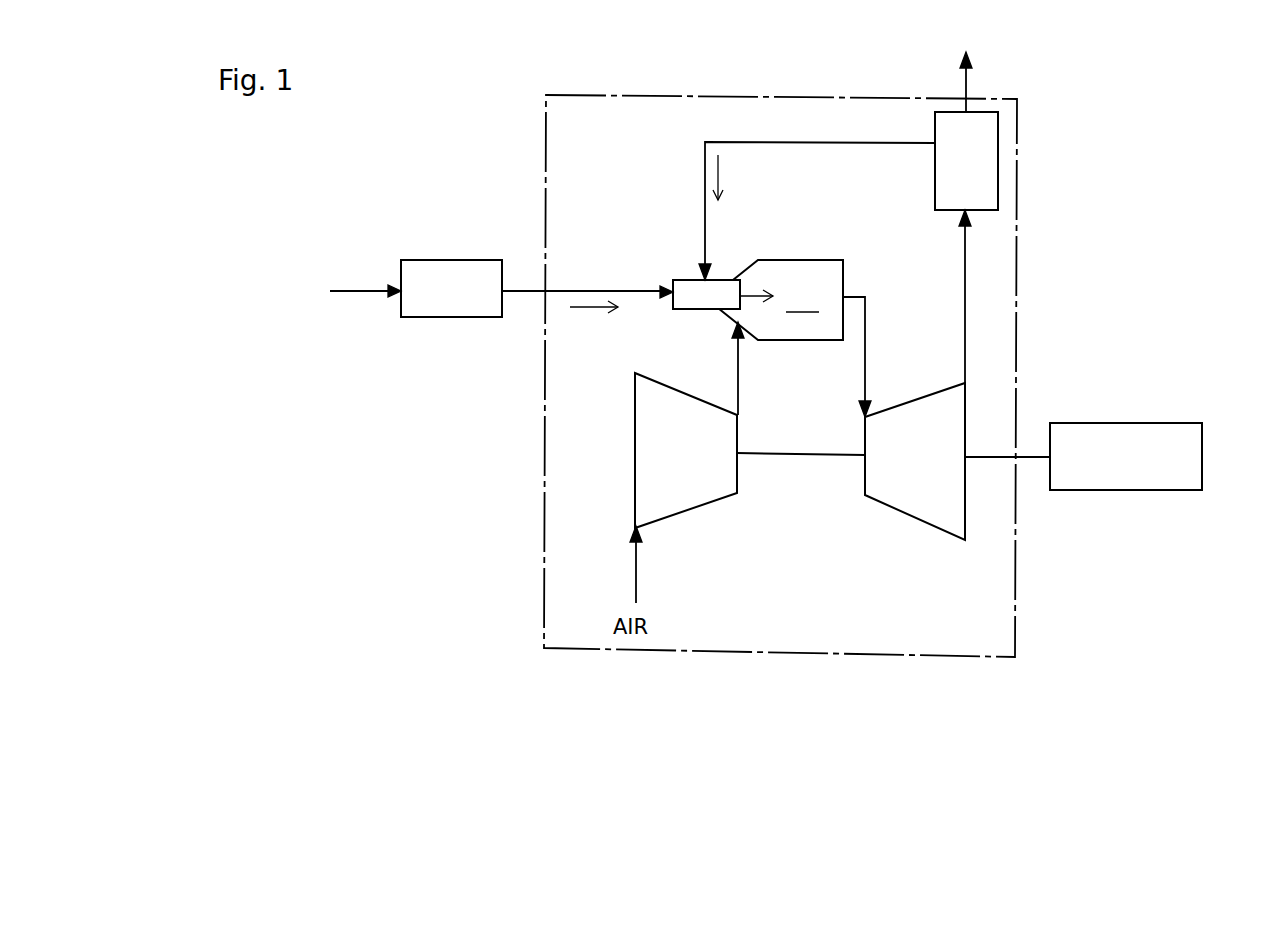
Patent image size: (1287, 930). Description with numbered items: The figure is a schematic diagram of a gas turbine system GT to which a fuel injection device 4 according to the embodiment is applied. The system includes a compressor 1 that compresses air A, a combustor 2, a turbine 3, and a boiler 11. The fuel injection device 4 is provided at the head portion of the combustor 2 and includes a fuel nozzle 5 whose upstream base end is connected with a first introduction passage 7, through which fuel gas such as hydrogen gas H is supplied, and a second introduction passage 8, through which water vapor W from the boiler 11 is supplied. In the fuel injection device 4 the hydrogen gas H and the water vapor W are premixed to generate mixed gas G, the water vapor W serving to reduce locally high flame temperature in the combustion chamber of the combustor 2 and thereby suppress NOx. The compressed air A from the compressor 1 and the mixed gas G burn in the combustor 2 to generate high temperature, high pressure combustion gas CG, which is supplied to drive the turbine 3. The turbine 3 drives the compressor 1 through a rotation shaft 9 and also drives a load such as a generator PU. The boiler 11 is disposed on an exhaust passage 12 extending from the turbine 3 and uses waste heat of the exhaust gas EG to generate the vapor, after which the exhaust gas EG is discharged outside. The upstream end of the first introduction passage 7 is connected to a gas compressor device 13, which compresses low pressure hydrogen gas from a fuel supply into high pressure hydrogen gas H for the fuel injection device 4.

The compressor 1 is at (680, 513).
The combustor 2 is at (822, 258).
The turbine 3 is at (905, 518).
The fuel injection device 4 is at (680, 315).
The fuel nozzle 5 is at (725, 290).
The first introduction passage 7 is at (587, 290).
The second introduction passage 8 is at (826, 140).
The rotation shaft 9 is at (800, 455).
The boiler 11 is at (1000, 142).
The exhaust passage 12 is at (968, 258).
The gas compressor device 13 is at (456, 258).
The gas turbine system GT is at (1010, 95).
The generator PU is at (1152, 422).
The exhaust gas EG is at (963, 86).
The combustion gas CG is at (870, 320).
The air A is at (738, 368).
The mixed gas G is at (743, 300).
The hydrogen gas H is at (584, 315).
The water vapor W is at (720, 168).